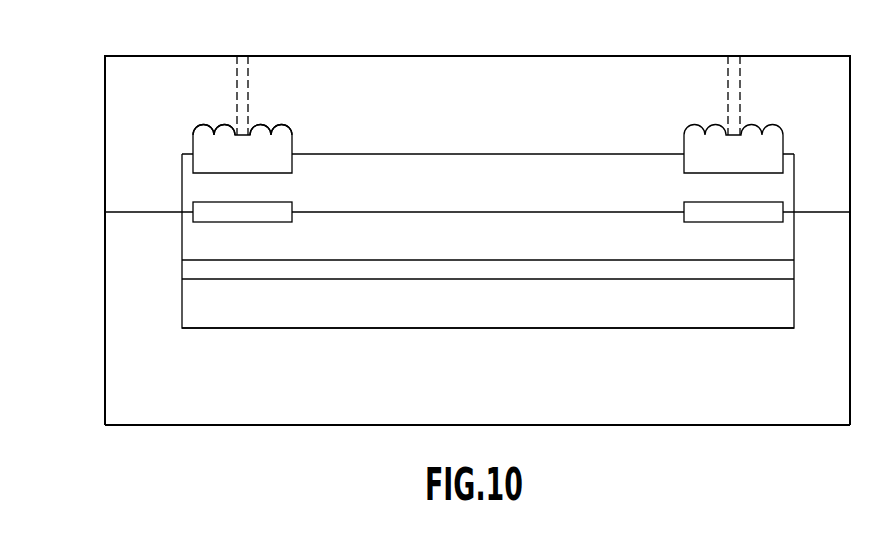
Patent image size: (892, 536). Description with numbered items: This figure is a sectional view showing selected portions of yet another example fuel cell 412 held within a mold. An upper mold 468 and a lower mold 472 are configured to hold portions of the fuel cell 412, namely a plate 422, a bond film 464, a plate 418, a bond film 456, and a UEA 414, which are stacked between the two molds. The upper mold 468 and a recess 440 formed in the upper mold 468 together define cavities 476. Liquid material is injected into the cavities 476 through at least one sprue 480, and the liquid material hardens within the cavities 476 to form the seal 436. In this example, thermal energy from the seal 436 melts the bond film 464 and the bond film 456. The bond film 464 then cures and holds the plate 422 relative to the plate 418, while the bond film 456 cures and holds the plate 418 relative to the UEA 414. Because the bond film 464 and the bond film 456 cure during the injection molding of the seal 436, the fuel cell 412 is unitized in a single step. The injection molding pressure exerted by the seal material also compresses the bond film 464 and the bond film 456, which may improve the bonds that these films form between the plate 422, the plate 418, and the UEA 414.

The fuel cell 412 is at (631, 107).
The UEA 414 is at (194, 302).
The plate 418 is at (194, 240).
The plate 422 is at (193, 163).
The seal 436 is at (200, 148).
The recess 440 is at (294, 164).
The bond film 456 is at (194, 270).
The bond film 464 is at (193, 207).
The upper mold 468 is at (120, 107).
The lower mold 472 is at (120, 411).
The cavities 476 is at (199, 131).
The sprue 480 is at (250, 72).